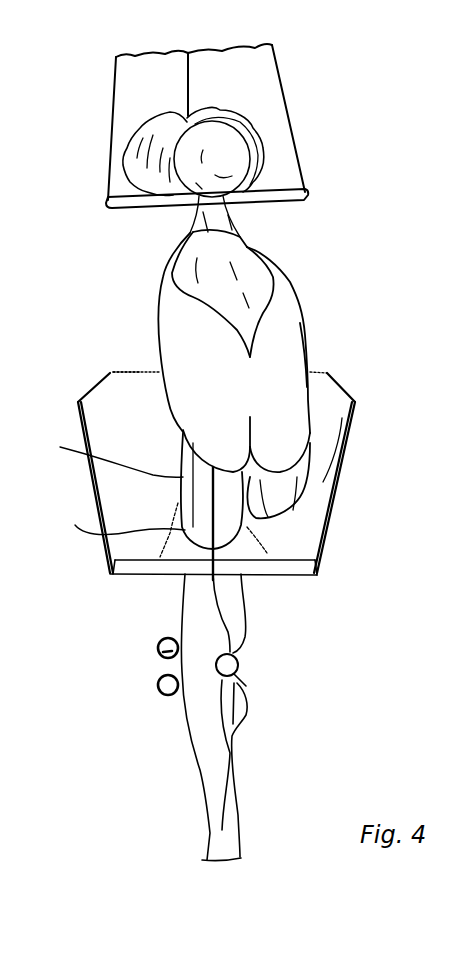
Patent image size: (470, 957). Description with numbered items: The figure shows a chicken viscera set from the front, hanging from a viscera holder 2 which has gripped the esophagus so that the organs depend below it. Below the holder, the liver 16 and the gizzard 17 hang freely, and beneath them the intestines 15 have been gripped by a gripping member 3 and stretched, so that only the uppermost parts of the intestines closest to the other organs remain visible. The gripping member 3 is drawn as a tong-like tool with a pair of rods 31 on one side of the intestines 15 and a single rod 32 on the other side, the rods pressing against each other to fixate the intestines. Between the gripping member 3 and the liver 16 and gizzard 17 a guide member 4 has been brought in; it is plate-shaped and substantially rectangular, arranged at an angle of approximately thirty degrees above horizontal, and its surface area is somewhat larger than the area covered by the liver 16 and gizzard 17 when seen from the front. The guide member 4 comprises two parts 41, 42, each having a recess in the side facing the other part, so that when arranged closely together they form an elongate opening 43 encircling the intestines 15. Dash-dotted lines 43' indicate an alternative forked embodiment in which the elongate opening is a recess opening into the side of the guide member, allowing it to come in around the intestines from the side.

The viscera holder 2 is at (302, 134).
The gripping member 3 is at (242, 667).
The guide member 4 is at (342, 502).
The intestines 15 is at (240, 620).
The liver 16 is at (310, 350).
The gizzard 17 is at (325, 465).
The pair of rods 31 is at (155, 655).
The single rod 32 is at (242, 676).
The part of the guide member 41 is at (320, 490).
The part of the guide member 42 is at (120, 400).
The elongate opening 43 is at (102, 452).
The recess opening into the side of the guide member 43' is at (103, 522).